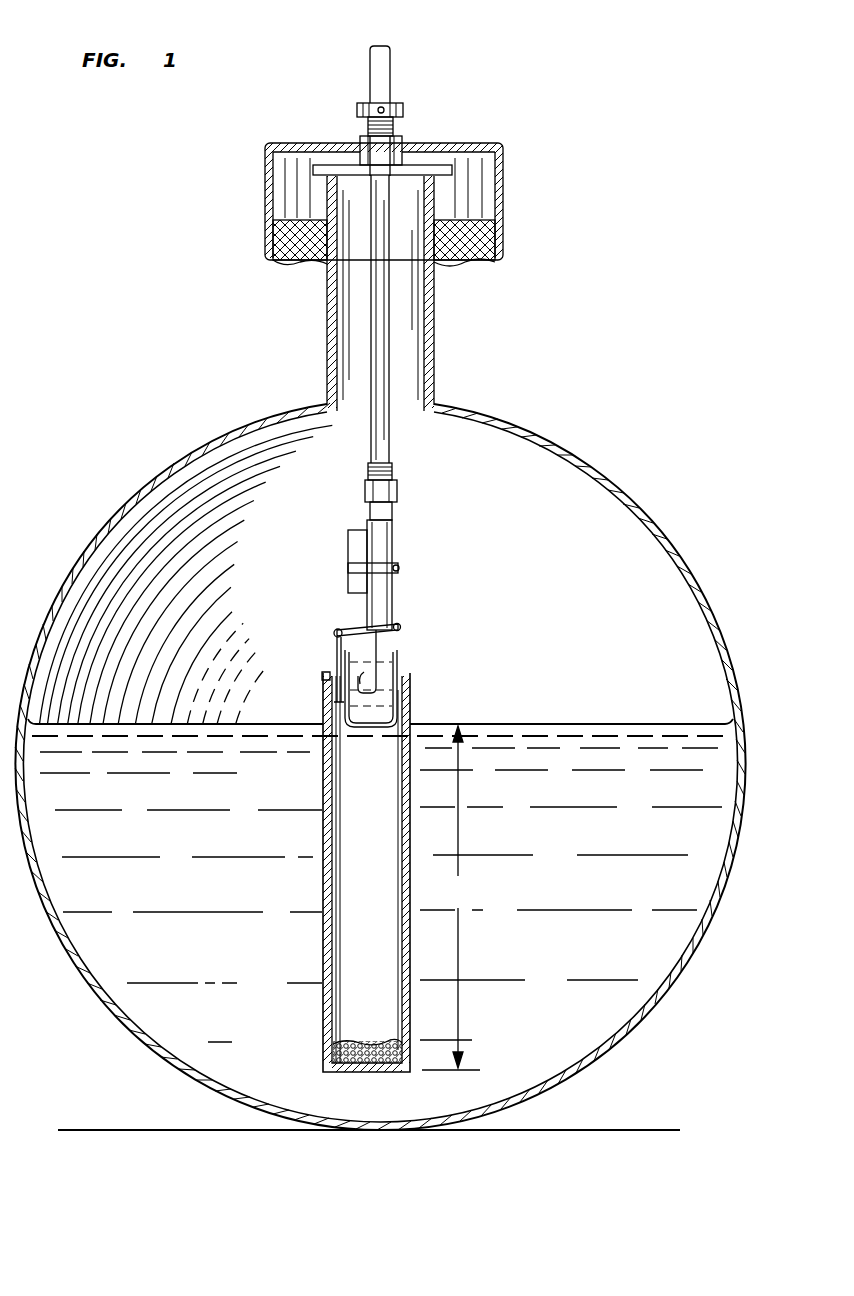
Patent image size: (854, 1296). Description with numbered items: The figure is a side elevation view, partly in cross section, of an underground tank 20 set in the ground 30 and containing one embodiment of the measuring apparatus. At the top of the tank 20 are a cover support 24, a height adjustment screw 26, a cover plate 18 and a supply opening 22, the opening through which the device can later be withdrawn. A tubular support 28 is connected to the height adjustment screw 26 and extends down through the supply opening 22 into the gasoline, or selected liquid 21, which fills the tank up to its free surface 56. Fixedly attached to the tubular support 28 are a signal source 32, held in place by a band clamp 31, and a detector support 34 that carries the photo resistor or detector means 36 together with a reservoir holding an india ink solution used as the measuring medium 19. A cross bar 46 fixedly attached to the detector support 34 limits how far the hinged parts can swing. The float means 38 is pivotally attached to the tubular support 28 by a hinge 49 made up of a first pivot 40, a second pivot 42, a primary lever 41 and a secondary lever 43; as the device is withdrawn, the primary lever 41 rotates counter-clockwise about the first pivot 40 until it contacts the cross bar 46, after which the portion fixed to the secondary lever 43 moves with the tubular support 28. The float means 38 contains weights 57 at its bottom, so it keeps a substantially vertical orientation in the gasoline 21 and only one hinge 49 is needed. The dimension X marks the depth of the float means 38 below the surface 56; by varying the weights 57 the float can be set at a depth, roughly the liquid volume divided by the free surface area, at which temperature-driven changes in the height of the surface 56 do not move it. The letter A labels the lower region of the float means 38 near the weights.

The cover plate 18 is at (418, 165).
The measuring medium 19 is at (386, 697).
The underground tank 20 is at (603, 462).
The selected liquid 21 is at (607, 845).
The supply opening 22 is at (357, 352).
The cover support 24 is at (503, 181).
The height adjustment screw 26 is at (403, 109).
The tubular support 28 is at (392, 360).
The ground 30 is at (470, 262).
The band clamp 31 is at (400, 567).
The signal source 32 is at (347, 551).
The detector support 34 is at (400, 663).
The detector means 36 is at (361, 727).
The float means 38 is at (412, 710).
The first pivot 40 is at (396, 628).
The primary lever 41 is at (357, 628).
The second pivot 42 is at (334, 633).
The secondary lever 43 is at (335, 663).
The cross bar 46 is at (384, 648).
The hinge 49 is at (352, 612).
The surface 56 is at (570, 722).
The weights 57 is at (387, 1065).
The depth X is at (450, 898).
The level A is at (345, 1075).